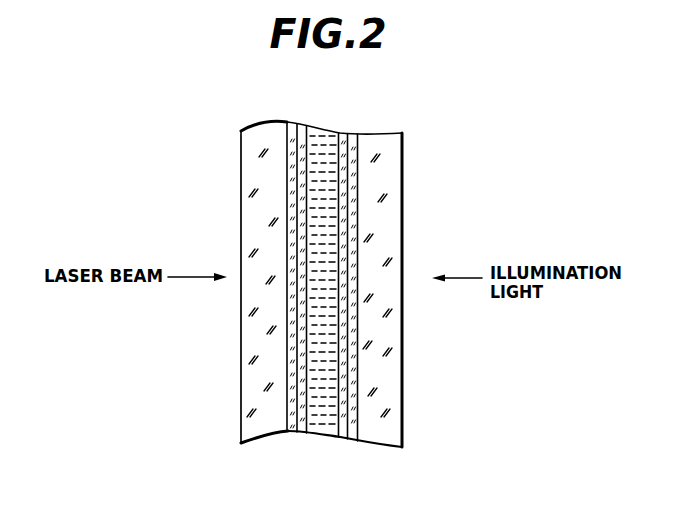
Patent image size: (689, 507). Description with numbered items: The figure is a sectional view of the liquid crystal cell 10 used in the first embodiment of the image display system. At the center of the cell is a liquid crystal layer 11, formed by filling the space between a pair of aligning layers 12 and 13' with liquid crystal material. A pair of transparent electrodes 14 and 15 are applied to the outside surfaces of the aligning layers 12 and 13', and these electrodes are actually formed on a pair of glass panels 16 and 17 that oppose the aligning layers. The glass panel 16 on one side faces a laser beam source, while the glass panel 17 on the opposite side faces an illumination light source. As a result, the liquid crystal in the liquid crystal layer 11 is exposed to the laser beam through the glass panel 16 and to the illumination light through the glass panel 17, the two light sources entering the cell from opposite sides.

The liquid crystal cell 10 is at (432, 372).
The liquid crystal layer 11 is at (320, 428).
The aligning layer 12 is at (302, 132).
The transparent electrode 13' is at (358, 256).
The transparent electrode 14 is at (288, 428).
The transparent electrode 15 is at (352, 435).
The glass panel 16 is at (253, 427).
The glass panel 17 is at (385, 437).